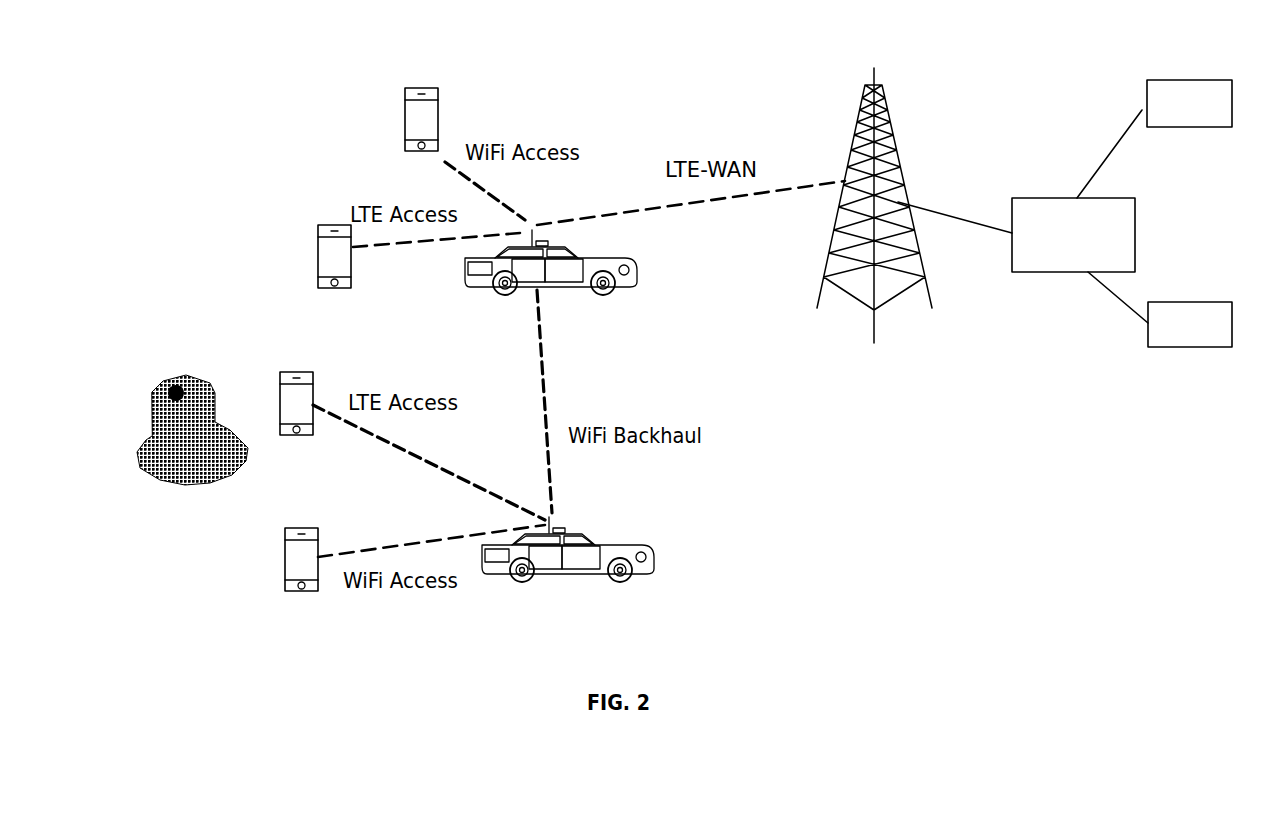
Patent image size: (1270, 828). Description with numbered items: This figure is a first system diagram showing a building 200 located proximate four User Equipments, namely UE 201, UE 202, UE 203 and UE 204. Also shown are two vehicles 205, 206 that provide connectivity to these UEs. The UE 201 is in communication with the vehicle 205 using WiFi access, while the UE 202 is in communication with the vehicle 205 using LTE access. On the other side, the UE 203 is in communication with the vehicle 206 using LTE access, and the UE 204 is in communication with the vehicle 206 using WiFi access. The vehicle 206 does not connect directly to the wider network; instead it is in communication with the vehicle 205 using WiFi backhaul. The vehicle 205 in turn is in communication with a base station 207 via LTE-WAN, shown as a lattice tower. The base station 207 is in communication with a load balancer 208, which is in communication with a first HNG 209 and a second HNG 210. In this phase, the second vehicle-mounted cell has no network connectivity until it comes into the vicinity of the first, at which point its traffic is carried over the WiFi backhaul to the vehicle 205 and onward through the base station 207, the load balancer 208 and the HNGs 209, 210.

The building 200 is at (170, 375).
The User Equipment 201 is at (390, 100).
The User Equipment 202 is at (318, 208).
The User Equipment 203 is at (287, 357).
The User Equipment 204 is at (280, 552).
The vehicle 205 is at (630, 295).
The vehicle 206 is at (653, 568).
The base station 207 is at (852, 82).
The load balancer 208 is at (1028, 185).
The HNG 209 is at (1128, 73).
The HNG 210 is at (1152, 348).